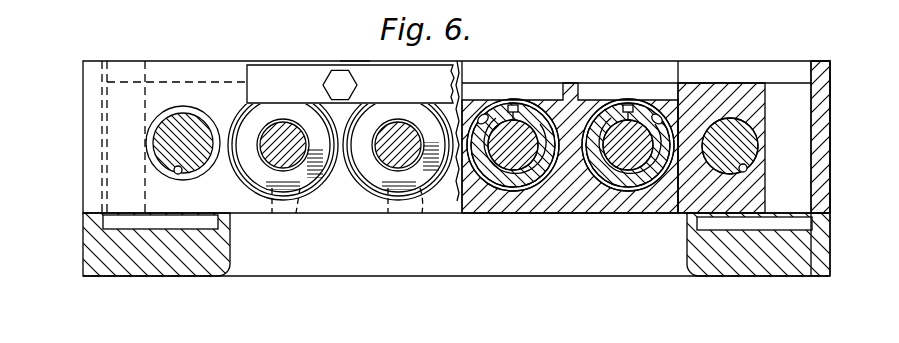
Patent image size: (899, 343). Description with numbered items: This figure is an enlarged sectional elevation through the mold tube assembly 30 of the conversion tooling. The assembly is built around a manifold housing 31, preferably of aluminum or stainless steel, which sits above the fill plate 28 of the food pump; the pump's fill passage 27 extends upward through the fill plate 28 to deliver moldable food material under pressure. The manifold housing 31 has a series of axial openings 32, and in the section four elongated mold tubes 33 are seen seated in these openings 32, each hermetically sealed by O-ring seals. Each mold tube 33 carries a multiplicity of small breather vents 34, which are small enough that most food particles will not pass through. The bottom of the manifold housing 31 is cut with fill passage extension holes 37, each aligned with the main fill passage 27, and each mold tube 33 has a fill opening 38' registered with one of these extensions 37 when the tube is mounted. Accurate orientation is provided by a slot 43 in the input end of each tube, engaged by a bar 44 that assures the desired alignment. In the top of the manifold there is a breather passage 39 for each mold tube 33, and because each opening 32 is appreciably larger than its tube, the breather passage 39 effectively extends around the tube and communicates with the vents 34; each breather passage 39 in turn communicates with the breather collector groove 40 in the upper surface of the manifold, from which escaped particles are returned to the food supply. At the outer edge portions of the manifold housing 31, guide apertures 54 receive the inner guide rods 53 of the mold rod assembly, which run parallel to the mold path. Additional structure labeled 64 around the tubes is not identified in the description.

The fill passage 27 is at (668, 262).
The fill plate 28 is at (90, 258).
The mold tube assembly 30 is at (353, 56).
The manifold housing 31 is at (90, 167).
The axial opening 32 is at (365, 170).
The mold tube 33 is at (376, 114).
The breather vent 34 is at (518, 106).
The fill passage extension hole 37 is at (297, 230).
The passage 38' is at (311, 225).
The breather passage 39 is at (642, 70).
The breather collector groove 40 is at (745, 70).
The slot 43 is at (280, 98).
The bar 44 is at (306, 75).
The inner guide rod 53 is at (172, 135).
The guide aperture 54 is at (178, 172).
The bearing 64 is at (270, 137).